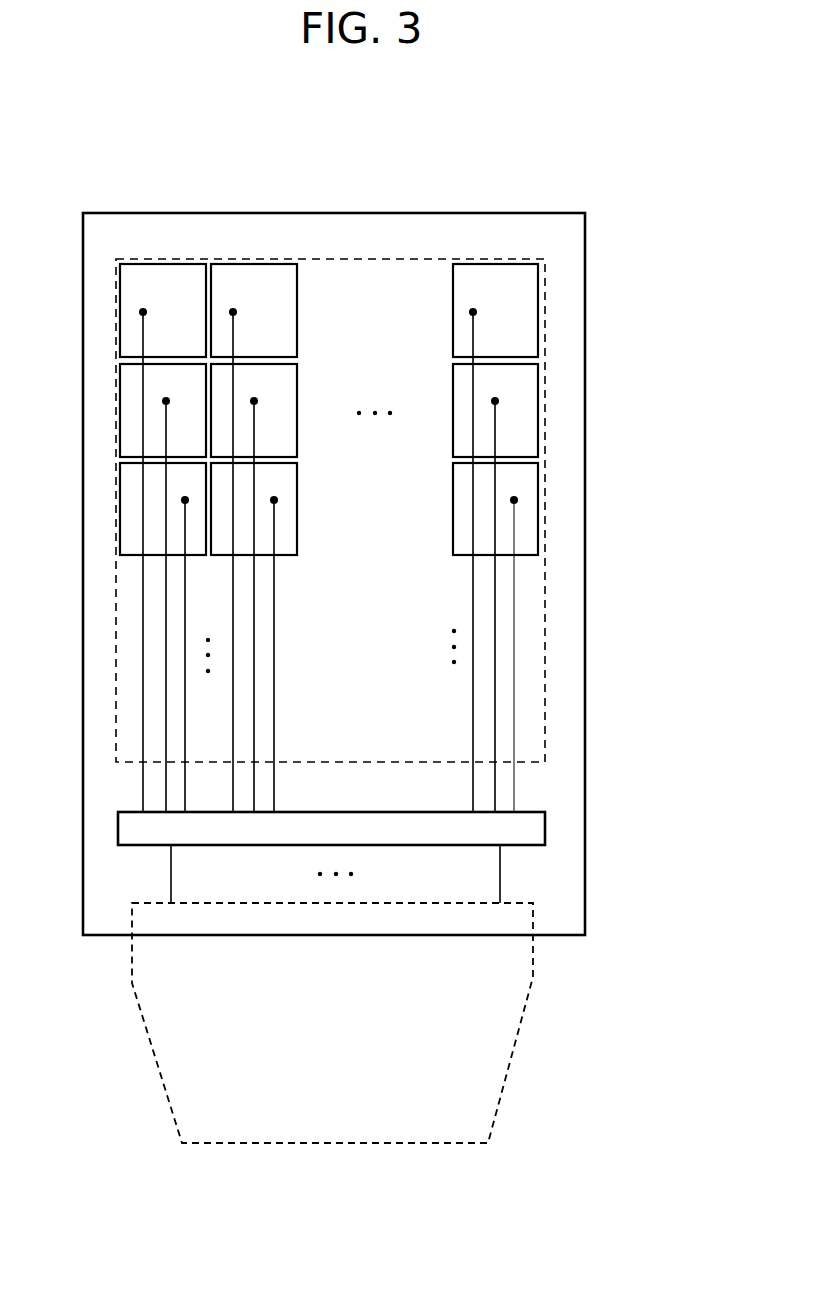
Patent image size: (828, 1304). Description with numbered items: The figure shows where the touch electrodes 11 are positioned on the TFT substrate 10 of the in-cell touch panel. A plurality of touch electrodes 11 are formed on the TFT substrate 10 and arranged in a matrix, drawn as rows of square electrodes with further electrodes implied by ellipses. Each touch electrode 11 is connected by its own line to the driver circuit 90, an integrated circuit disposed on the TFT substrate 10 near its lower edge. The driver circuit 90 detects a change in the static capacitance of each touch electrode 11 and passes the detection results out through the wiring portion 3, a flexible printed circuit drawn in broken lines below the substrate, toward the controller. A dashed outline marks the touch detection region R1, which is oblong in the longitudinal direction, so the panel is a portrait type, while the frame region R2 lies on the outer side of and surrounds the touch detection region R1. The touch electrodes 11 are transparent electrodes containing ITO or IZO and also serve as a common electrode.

The wiring portion 3 is at (143, 1037).
The TFT substrate 10 is at (587, 375).
The touch electrodes 11 is at (160, 302).
The driver circuit 90 is at (532, 830).
The touch detection region R1 is at (340, 257).
The frame region R2 is at (507, 230).